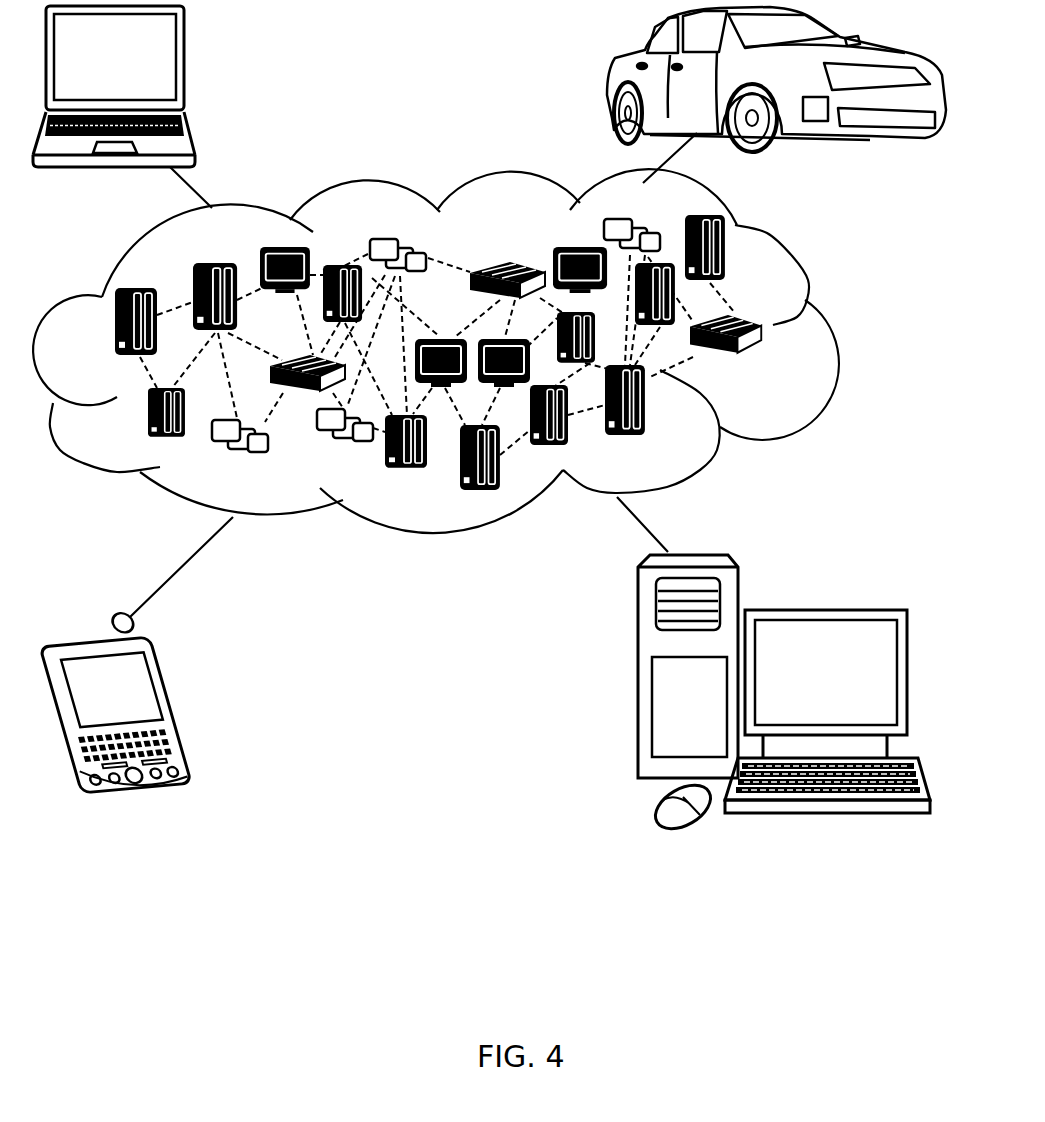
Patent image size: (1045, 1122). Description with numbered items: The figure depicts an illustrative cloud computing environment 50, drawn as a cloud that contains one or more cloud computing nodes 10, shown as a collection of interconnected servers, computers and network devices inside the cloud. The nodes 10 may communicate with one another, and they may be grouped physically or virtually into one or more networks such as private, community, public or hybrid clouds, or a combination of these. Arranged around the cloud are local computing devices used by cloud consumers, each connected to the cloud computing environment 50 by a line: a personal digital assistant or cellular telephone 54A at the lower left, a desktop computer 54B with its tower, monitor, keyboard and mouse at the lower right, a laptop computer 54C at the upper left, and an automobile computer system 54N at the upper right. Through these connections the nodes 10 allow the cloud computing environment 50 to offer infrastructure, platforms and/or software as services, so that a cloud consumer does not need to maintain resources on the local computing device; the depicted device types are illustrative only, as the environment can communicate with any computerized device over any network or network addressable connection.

The cloud computing environment 50 is at (823, 332).
The cloud computing nodes 10 is at (772, 362).
The laptop computer 54C is at (185, 65).
The automobile computer system 54N is at (610, 84).
The personal digital assistant (PDA) or cellular telephone 54A is at (170, 703).
The desktop computer 54B is at (822, 608).